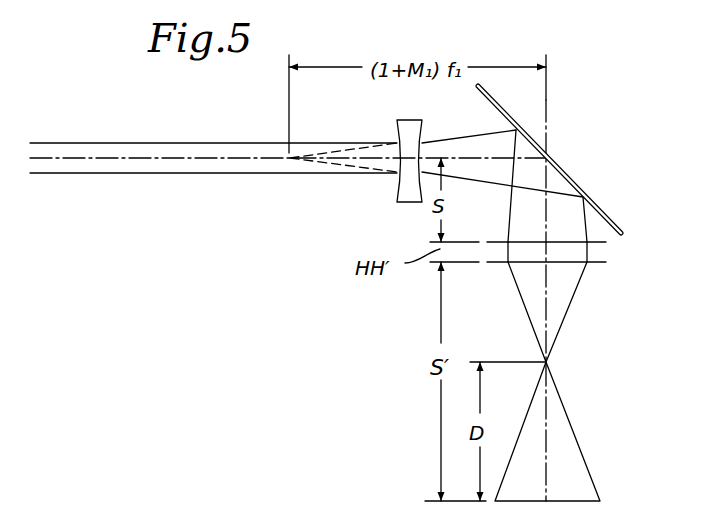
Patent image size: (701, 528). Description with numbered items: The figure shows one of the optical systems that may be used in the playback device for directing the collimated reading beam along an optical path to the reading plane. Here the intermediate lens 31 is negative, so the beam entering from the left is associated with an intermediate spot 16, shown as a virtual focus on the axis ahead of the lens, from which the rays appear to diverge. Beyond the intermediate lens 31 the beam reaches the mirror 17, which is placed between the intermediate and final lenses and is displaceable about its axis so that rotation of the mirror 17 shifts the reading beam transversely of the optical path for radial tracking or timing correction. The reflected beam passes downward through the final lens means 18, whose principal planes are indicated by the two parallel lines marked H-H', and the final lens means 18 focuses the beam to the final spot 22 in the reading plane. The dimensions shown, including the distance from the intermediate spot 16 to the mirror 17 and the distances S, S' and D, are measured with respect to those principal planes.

The intermediate spot 16 is at (290, 160).
The intermediate lens 31 is at (406, 203).
The mirror 17 is at (604, 212).
The final lens means 18 is at (592, 250).
The final spot 22 is at (548, 362).